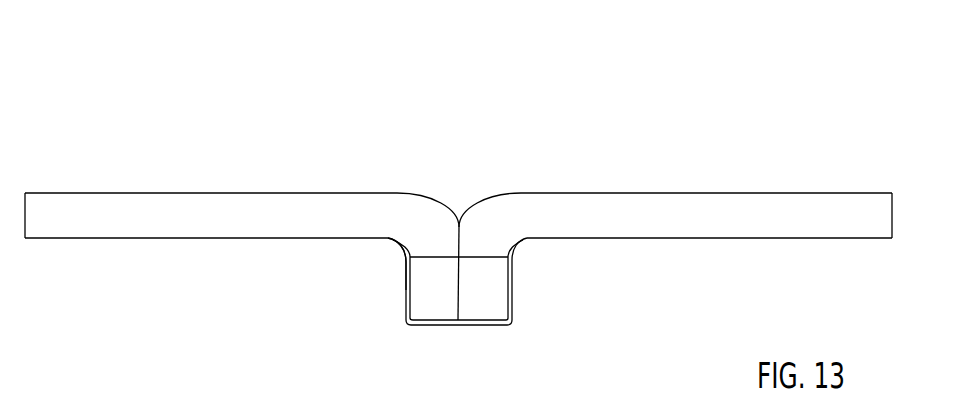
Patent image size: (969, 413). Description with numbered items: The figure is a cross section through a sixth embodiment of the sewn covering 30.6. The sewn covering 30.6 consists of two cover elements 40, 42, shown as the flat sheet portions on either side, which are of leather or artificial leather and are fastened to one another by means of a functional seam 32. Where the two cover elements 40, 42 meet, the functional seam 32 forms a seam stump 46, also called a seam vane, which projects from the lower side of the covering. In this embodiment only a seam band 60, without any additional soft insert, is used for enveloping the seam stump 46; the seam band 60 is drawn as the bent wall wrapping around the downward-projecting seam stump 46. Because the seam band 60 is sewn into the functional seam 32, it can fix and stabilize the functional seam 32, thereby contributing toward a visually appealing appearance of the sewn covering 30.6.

The sewn covering 30.6 is at (458, 184).
The cover element 42 is at (181, 207).
The cover element 40 is at (678, 208).
The functional seam 32 is at (494, 250).
The seam stump 46 is at (438, 275).
The seam band 60 is at (407, 283).